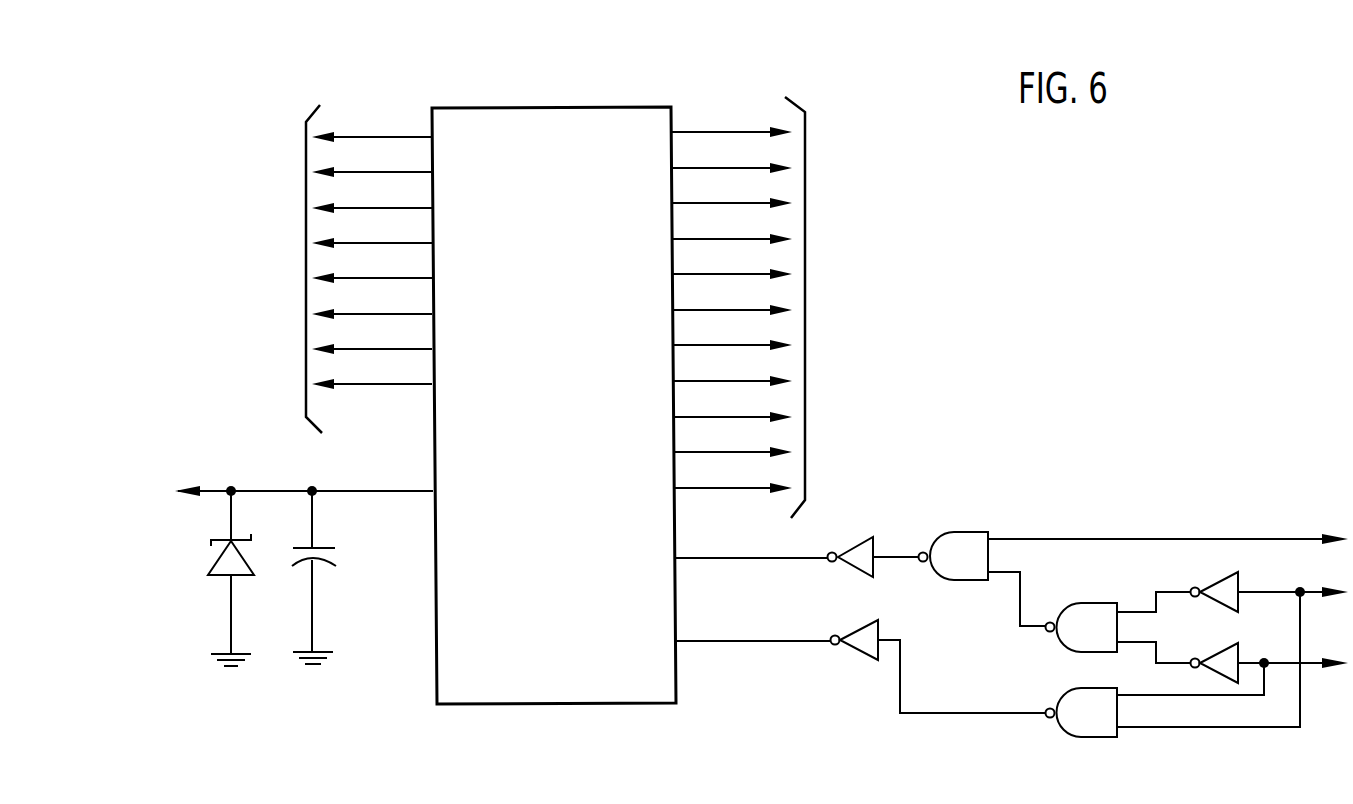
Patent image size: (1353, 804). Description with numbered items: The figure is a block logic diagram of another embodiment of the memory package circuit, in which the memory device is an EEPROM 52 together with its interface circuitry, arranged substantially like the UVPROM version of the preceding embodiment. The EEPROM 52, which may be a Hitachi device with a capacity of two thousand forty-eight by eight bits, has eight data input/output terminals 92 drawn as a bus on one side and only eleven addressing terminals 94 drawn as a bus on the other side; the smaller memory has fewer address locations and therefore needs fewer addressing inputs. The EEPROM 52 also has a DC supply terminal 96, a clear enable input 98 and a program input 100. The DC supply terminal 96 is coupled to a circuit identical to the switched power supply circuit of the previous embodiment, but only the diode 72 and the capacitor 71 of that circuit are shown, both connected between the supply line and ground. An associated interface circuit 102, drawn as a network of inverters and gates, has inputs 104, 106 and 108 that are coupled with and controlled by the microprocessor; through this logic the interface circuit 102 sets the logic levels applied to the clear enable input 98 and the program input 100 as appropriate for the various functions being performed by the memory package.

The EEPROM 52 is at (535, 116).
The data input/output terminals 92 is at (305, 148).
The addressing terminals 94 is at (805, 290).
The DC supply terminal 96 is at (415, 488).
The clear enable input 98 is at (697, 558).
The program input 100 is at (692, 641).
The interface circuit 102 is at (1097, 531).
The input 104 is at (1315, 536).
The input 106 is at (1318, 588).
The input 108 is at (1308, 660).
The capacitor 71 is at (323, 544).
The diode 72 is at (219, 561).